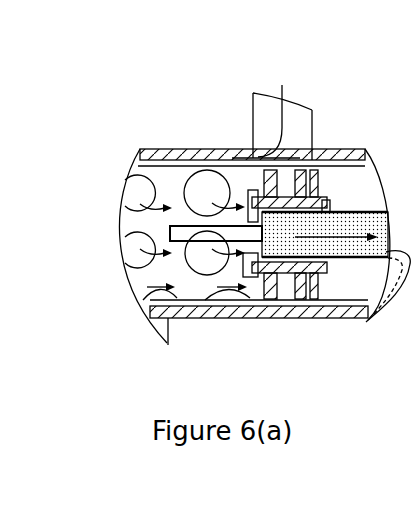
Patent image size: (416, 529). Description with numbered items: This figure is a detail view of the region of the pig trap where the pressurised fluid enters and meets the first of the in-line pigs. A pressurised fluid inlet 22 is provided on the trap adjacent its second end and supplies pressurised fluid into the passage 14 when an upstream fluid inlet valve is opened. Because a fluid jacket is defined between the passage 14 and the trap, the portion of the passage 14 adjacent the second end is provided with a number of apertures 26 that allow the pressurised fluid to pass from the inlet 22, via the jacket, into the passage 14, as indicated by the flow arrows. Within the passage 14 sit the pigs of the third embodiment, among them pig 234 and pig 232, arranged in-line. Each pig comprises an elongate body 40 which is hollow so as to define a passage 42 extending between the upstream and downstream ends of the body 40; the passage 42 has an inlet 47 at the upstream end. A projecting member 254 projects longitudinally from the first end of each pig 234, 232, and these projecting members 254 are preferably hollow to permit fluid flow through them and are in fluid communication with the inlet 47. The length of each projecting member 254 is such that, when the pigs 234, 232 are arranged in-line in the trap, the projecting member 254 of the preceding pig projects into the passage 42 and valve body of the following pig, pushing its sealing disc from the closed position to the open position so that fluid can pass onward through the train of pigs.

The passage 14 is at (120, 238).
The apertures 26 is at (173, 170).
The pressurised fluid inlet 22 is at (252, 127).
The pig 234 is at (355, 210).
The projecting member 254 is at (190, 245).
The inlet 47 is at (256, 252).
The passage 42 is at (380, 347).
The pig 232 is at (415, 295).
The elongate body 40 is at (410, 136).